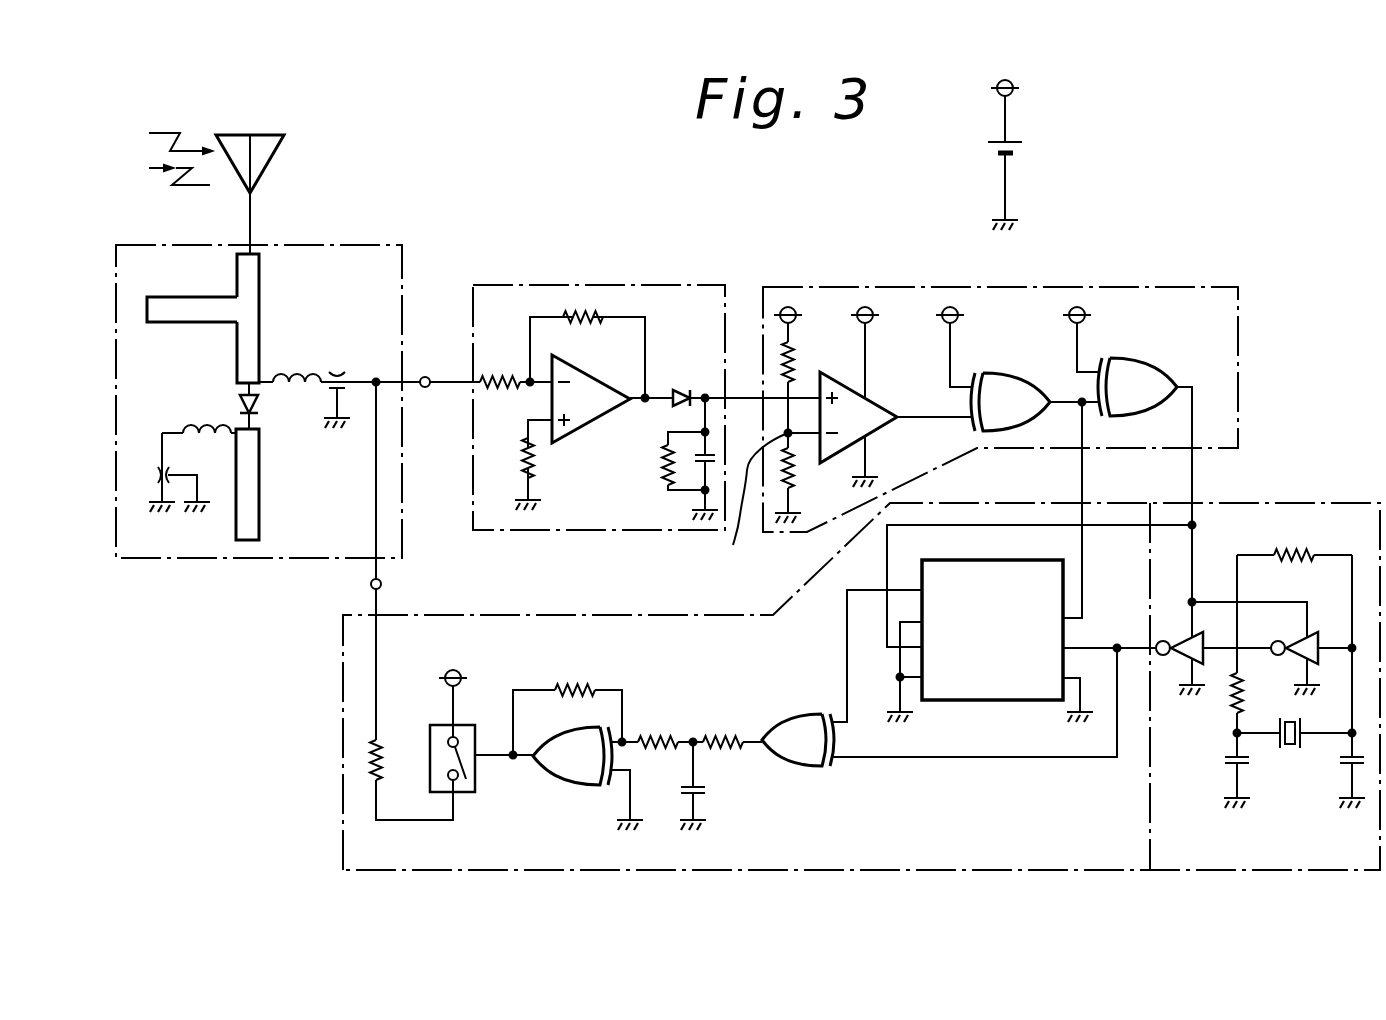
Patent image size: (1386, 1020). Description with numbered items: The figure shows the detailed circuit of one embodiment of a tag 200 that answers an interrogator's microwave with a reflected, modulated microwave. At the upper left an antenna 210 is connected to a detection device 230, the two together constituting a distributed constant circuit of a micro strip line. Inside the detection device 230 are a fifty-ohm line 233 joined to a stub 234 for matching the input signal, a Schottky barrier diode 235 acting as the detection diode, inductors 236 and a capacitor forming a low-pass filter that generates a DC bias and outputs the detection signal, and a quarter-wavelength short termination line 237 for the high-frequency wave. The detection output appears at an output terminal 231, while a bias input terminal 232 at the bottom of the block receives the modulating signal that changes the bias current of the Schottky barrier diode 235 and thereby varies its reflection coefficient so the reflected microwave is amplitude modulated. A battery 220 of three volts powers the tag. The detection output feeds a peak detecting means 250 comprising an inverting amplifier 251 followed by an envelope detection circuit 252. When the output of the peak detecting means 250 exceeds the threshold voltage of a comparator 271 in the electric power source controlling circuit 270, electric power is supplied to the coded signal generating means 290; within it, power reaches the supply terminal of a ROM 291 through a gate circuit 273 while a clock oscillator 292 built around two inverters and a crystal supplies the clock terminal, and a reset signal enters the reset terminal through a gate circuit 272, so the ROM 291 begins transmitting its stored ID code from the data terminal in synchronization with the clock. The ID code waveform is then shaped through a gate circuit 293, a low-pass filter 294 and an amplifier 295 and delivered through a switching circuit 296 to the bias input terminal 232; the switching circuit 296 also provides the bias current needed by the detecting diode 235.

The tag 200 is at (684, 205).
The antenna 210 is at (266, 158).
The battery 220 is at (1025, 143).
The detection device 230 is at (383, 240).
The output terminal b 231 is at (425, 377).
The bias input terminal 232 is at (370, 584).
The 50Ω line 233 is at (260, 262).
The stub 234 is at (188, 306).
The Schottky barrier diode 235 is at (240, 400).
The inductor 236 is at (300, 378).
The strip line 237 is at (259, 483).
The peak detecting means 250 is at (612, 285).
The inverting amplifier 251 is at (585, 436).
The envelope detection circuit 252 is at (700, 382).
The electric power source controlling circuit 270 is at (838, 287).
The comparator 271 is at (880, 405).
The gate circuit 272 is at (1020, 360).
The gate circuit 273 is at (1158, 366).
The coded signal generating means 290 is at (674, 609).
The ROM 291 is at (997, 700).
The clock oscillator 292 is at (1290, 500).
The gate circuit 293 is at (795, 714).
The low-pass filter 294 is at (693, 739).
The amplifier 295 is at (565, 786).
The switching circuit 296 is at (430, 742).